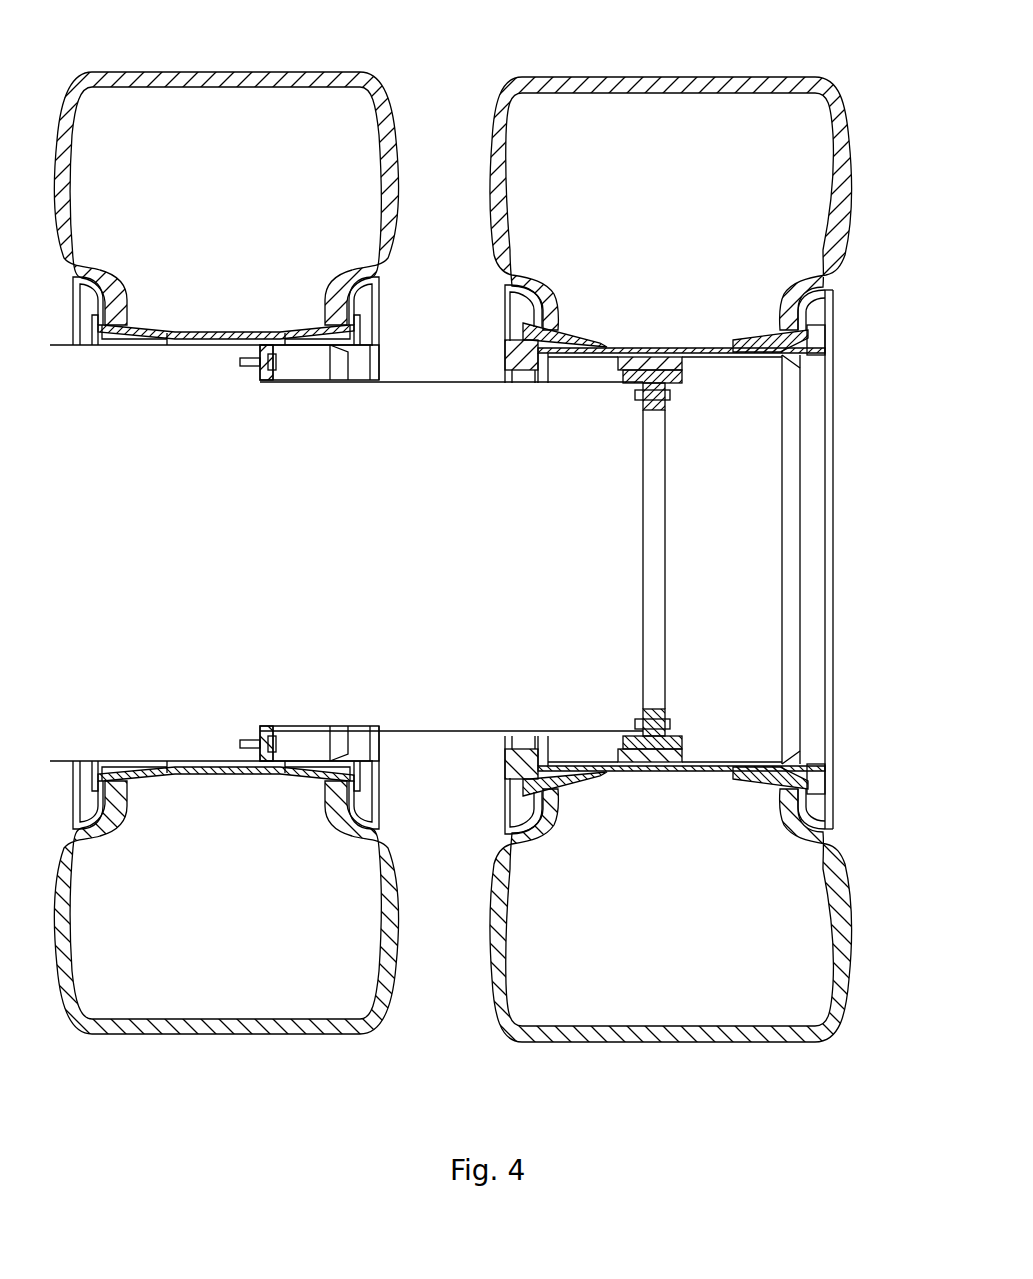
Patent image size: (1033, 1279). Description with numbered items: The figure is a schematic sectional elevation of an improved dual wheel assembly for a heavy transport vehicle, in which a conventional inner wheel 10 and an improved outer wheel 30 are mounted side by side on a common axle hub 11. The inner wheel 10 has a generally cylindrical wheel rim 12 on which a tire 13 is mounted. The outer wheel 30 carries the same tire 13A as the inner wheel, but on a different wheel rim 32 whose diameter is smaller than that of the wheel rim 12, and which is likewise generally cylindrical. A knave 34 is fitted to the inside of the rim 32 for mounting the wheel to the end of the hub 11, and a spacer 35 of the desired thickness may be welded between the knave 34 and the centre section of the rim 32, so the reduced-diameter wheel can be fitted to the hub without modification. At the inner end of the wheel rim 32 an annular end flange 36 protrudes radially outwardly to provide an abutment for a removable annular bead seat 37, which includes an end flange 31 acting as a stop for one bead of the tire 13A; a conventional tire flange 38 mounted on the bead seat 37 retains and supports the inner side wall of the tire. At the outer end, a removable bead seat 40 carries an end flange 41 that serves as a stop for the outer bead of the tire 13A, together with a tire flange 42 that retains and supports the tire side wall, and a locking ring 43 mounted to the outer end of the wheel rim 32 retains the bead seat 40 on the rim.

The inner wheel 10 is at (387, 75).
The axle hub 11 is at (419, 698).
The wheel rim 12 is at (300, 367).
The tire 13 is at (390, 118).
The tire 13A is at (845, 135).
The outer wheel 30 is at (840, 84).
The end flange 31 is at (530, 318).
The wheel rim 32 is at (750, 470).
The knave 34 is at (688, 383).
The spacer 35 is at (700, 368).
The end flange 36 is at (517, 357).
The bead seat 37 is at (587, 336).
The tire flange 38 is at (537, 270).
The bead seat 40 is at (772, 338).
The end flange 41 is at (817, 330).
The tire flange 42 is at (833, 290).
The locking ring 43 is at (833, 342).